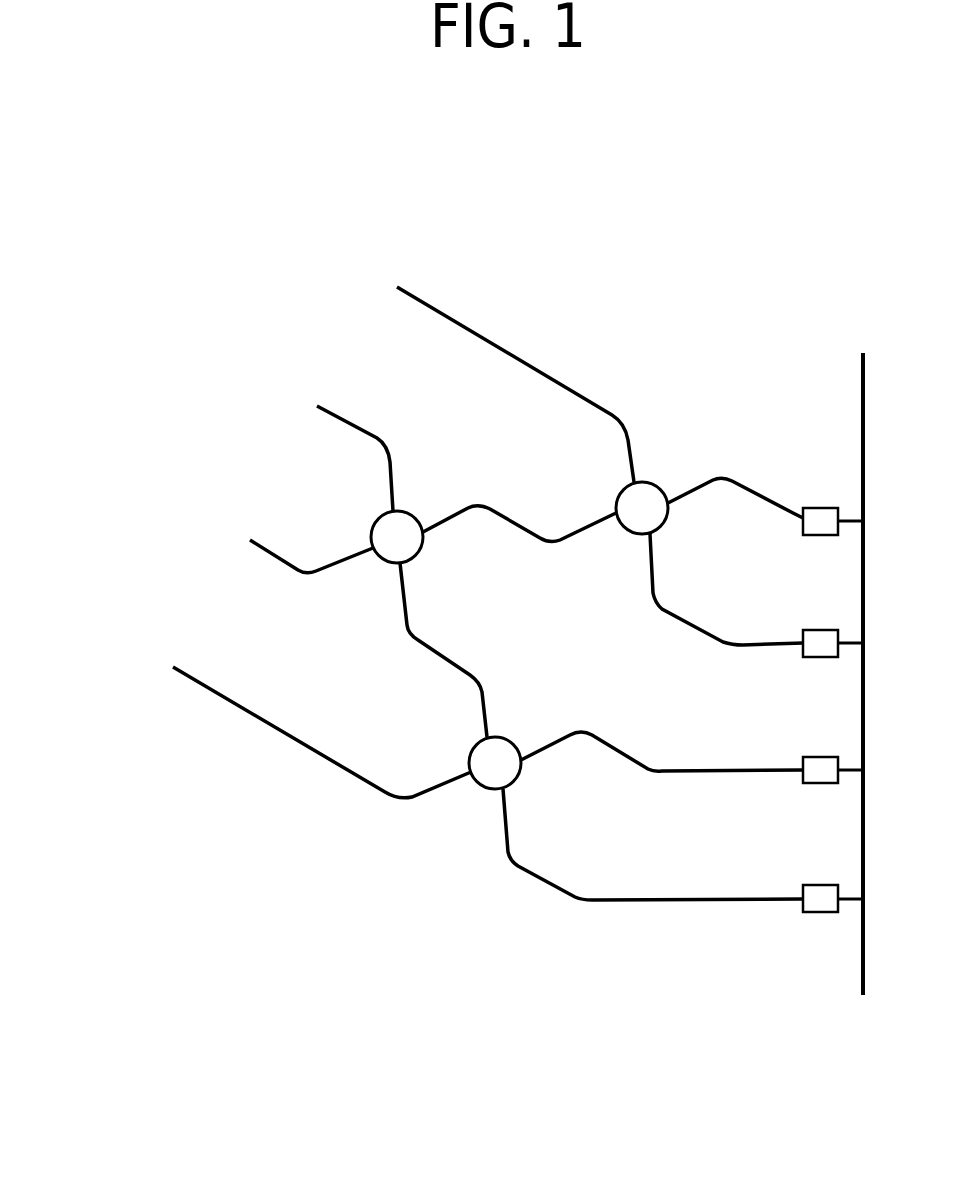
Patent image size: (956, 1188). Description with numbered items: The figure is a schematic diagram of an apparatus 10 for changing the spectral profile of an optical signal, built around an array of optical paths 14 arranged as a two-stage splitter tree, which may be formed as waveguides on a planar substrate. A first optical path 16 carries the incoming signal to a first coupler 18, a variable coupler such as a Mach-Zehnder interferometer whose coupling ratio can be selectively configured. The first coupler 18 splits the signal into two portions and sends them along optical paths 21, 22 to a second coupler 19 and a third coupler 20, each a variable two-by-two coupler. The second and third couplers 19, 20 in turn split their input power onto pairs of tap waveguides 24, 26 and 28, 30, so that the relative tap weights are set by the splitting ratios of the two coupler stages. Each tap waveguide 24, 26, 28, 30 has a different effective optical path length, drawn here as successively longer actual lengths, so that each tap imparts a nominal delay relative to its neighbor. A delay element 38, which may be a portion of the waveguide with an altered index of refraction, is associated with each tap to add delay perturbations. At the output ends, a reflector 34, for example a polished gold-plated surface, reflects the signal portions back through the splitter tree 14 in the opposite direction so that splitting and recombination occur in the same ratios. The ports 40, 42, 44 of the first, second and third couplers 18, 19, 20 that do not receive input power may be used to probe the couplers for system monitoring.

The apparatus for changing the spectral profile of an optical system 10 is at (243, 842).
The array of optical paths 14 is at (598, 373).
The first optical path 16 is at (300, 587).
The first coupler 18 is at (410, 508).
The second coupler 19 is at (480, 790).
The third coupler 20 is at (630, 540).
The optical path 21 is at (407, 605).
The optical path 22 is at (505, 523).
The tap waveguide 24 is at (642, 897).
The tap waveguide 26 is at (663, 767).
The tap waveguide 28 is at (750, 640).
The tap waveguide 30 is at (755, 500).
The reflector 34 is at (861, 404).
The delay element 38 is at (802, 532).
The port 40 is at (330, 417).
The port 42 is at (258, 718).
The port 44 is at (460, 322).